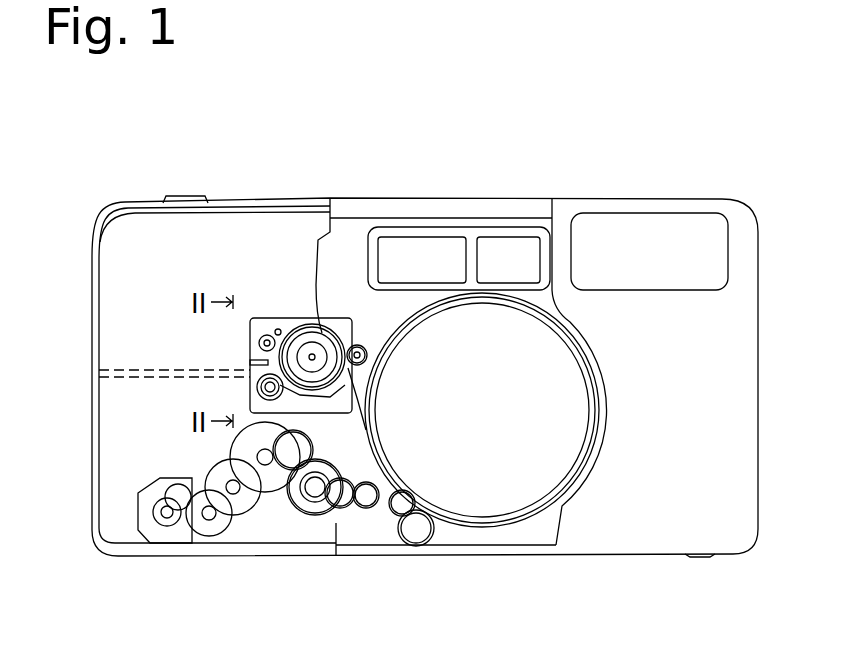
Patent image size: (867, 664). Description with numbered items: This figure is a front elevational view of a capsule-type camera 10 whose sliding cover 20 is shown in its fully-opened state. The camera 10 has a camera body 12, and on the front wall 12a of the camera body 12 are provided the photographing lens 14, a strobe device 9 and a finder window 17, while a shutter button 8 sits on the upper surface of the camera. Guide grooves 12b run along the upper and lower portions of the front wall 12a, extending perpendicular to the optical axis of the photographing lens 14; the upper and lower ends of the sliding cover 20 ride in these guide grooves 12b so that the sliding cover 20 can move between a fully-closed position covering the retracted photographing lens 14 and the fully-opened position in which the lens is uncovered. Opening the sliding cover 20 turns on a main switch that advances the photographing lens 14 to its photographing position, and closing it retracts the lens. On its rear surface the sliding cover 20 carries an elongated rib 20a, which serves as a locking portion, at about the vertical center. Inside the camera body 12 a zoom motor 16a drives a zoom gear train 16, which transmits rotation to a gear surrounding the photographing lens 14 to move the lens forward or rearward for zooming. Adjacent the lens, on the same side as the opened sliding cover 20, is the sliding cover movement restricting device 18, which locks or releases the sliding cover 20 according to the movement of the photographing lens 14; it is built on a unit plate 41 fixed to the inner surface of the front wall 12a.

The shutter button 8 is at (178, 196).
The strobe device 9 is at (713, 243).
The camera 10 is at (612, 185).
The camera body 12 is at (444, 197).
The front wall 12a is at (362, 218).
The guide grooves 12b is at (352, 210).
The photographing lens 14 is at (484, 495).
The zoom gear train 16 is at (274, 514).
The zoom motor 16a is at (166, 535).
The finder window 17 is at (501, 252).
The sliding cover movement restricting device 18 is at (276, 310).
The sliding cover 20 is at (270, 225).
The rib 20a is at (150, 370).
The unit plate 41 is at (293, 325).